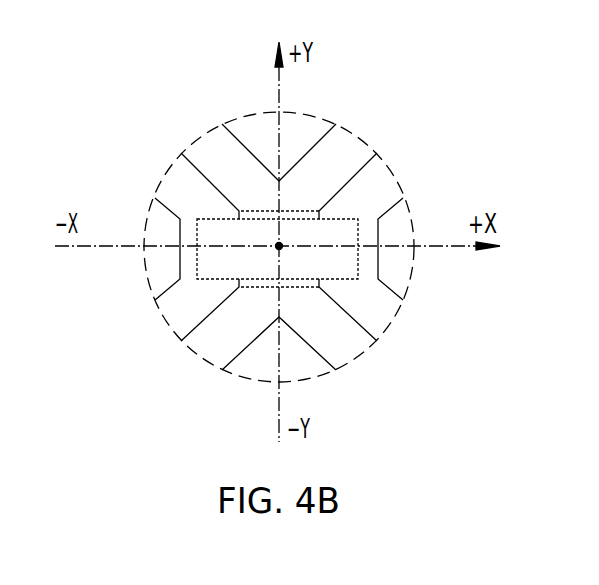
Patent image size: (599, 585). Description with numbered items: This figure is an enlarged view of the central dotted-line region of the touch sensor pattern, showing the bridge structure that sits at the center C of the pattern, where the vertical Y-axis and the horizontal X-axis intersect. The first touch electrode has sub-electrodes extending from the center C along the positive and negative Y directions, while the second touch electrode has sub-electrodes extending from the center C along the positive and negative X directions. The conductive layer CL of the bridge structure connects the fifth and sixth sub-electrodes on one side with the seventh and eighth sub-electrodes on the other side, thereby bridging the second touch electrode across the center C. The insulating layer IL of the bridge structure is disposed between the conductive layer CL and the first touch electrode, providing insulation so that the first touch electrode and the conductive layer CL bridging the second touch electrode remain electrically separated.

The insulating layer IL is at (255, 213).
The center C is at (281, 243).
The conductive layer CL is at (217, 265).